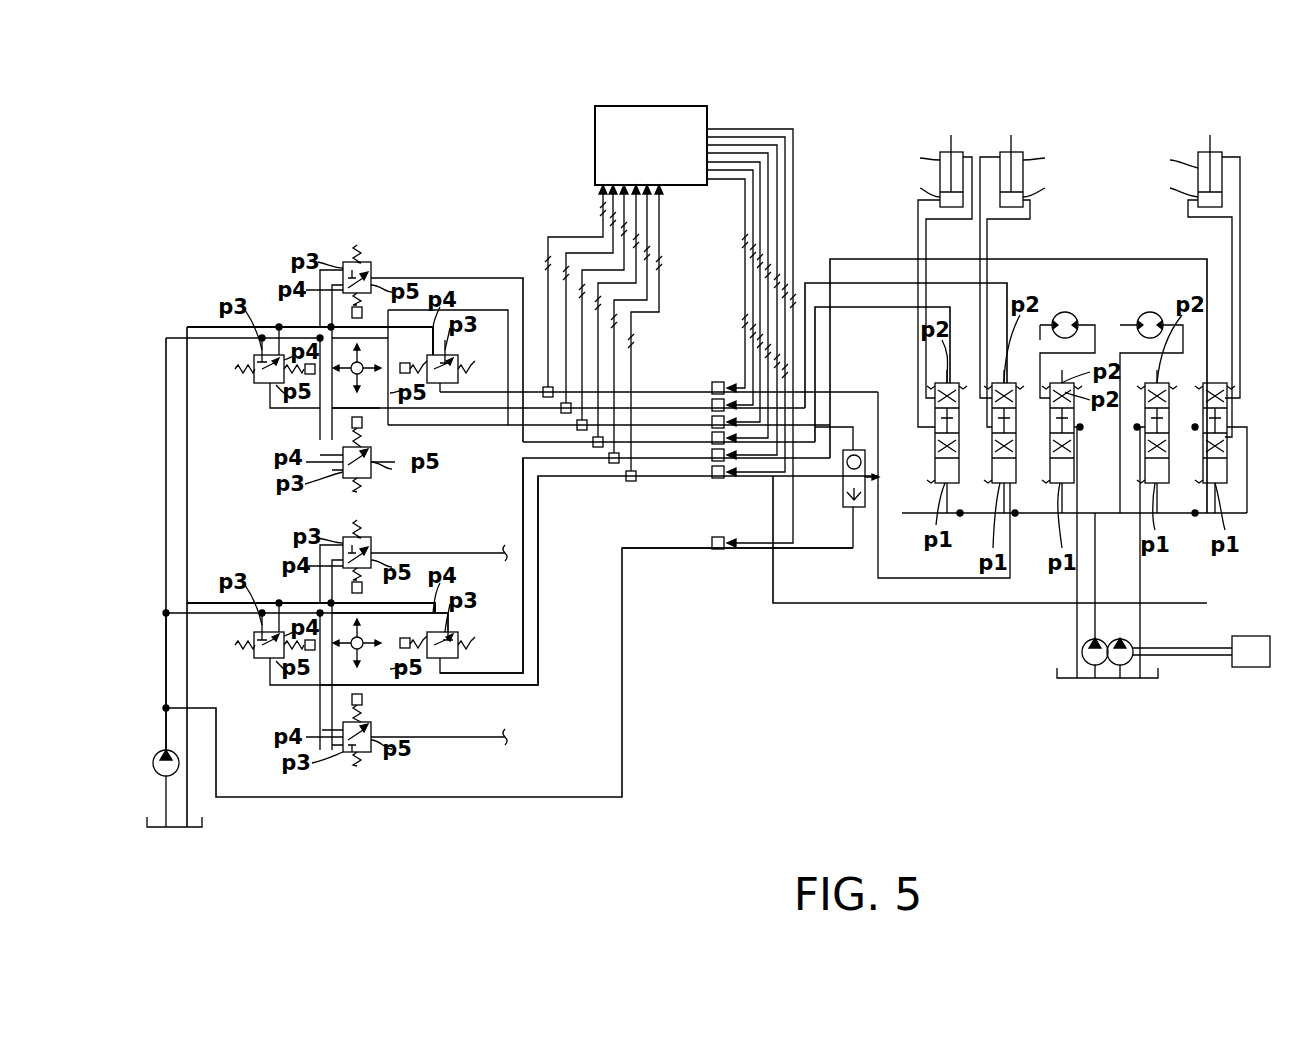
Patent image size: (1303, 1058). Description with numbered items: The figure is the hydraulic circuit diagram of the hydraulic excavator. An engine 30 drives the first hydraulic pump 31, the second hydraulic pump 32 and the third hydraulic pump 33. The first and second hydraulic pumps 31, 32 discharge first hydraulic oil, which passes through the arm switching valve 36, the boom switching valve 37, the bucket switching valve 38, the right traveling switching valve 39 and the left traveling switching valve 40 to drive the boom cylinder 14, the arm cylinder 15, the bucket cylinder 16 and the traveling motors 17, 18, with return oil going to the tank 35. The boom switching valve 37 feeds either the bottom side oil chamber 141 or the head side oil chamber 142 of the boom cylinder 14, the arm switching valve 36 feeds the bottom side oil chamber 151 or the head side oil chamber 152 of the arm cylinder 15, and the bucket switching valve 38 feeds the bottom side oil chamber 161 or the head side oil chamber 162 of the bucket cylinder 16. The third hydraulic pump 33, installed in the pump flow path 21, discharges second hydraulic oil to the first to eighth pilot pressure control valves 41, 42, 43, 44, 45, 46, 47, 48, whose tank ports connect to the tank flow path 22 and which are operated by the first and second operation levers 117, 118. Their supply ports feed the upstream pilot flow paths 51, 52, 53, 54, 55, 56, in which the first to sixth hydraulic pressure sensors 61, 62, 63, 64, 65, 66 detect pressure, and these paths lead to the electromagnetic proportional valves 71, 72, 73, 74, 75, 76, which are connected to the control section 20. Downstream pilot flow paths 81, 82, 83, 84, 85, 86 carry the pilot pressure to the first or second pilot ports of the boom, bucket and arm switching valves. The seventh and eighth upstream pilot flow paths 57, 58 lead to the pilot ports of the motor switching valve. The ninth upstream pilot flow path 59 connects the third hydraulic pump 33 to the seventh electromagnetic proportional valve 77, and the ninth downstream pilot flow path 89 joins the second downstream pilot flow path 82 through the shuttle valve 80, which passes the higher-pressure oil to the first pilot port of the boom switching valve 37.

The boom cylinder 14 is at (954, 150).
The arm cylinder 15 is at (1211, 150).
The bucket cylinder 16 is at (1014, 150).
The traveling motor 17 is at (1153, 312).
The traveling motor 18 is at (1068, 312).
The control section 20 is at (708, 112).
The pump flow path 21 is at (166, 482).
The tank flow path 22 is at (187, 482).
The engine 30 is at (1250, 667).
The first hydraulic pump 31 is at (1082, 640).
The second hydraulic pump 32 is at (1132, 640).
The third hydraulic pump 33 is at (150, 752).
The tank 35 is at (205, 827).
The arm switching valve 36 is at (1227, 470).
The boom switching valve 37 is at (935, 470).
The bucket switching valve 38 is at (992, 470).
The right traveling switching valve 39 is at (1169, 460).
The left traveling switching valve 40 is at (1050, 470).
The first pilot pressure control valve 41 is at (371, 270).
The second pilot pressure control valve 42 is at (371, 474).
The third pilot pressure control valve 43 is at (258, 356).
The fourth pilot pressure control valve 44 is at (460, 350).
The fifth pilot pressure control valve 45 is at (262, 660).
The sixth pilot pressure control valve 46 is at (460, 630).
The seventh pilot pressure control valve 47 is at (350, 537).
The eighth pilot pressure control valve 48 is at (371, 750).
The first upstream pilot flow path 51 is at (452, 278).
The second upstream pilot flow path 52 is at (395, 425).
The third upstream pilot flow path 53 is at (468, 410).
The fourth upstream pilot flow path 54 is at (497, 426).
The fifth upstream pilot flow path 55 is at (433, 687).
The sixth upstream pilot flow path 56 is at (476, 675).
The seventh upstream pilot flow path 57 is at (428, 553).
The eighth upstream pilot flow path 58 is at (428, 737).
The ninth upstream pilot flow path 59 is at (400, 797).
The first hydraulic pressure sensor 61 is at (598, 447).
The second hydraulic pressure sensor 62 is at (582, 430).
The third hydraulic pressure sensor 63 is at (566, 413).
The fourth hydraulic pressure sensor 64 is at (548, 397).
The fifth hydraulic pressure sensor 65 is at (631, 481).
The sixth hydraulic pressure sensor 66 is at (614, 463).
The first electromagnetic proportional valve 71 is at (712, 442).
The second electromagnetic proportional valve 72 is at (712, 422).
The third electromagnetic proportional valve 73 is at (712, 405).
The fourth electromagnetic proportional valve 74 is at (712, 386).
The fifth electromagnetic proportional valve 75 is at (716, 478).
The sixth electromagnetic proportional valve 76 is at (712, 459).
The seventh electromagnetic proportional valve 77 is at (712, 549).
The shuttle valve 80 is at (843, 480).
The first downstream pilot flow path 81 is at (880, 307).
The second downstream pilot flow path 82 is at (853, 427).
The third downstream pilot flow path 83 is at (872, 283).
The fourth downstream pilot flow path 84 is at (880, 408).
The fifth downstream pilot flow path 85 is at (820, 605).
The sixth downstream pilot flow path 86 is at (840, 259).
The ninth downstream pilot flow path 89 is at (748, 552).
The first operation lever 117 is at (362, 374).
The second operation lever 118 is at (362, 640).
The bottom side oil chamber 141 is at (908, 185).
The head side oil chamber 142 is at (908, 157).
The bottom side oil chamber 151 is at (1160, 185).
The head side oil chamber 152 is at (1160, 157).
The bottom side oil chamber 161 is at (1056, 190).
The head side oil chamber 162 is at (1056, 157).